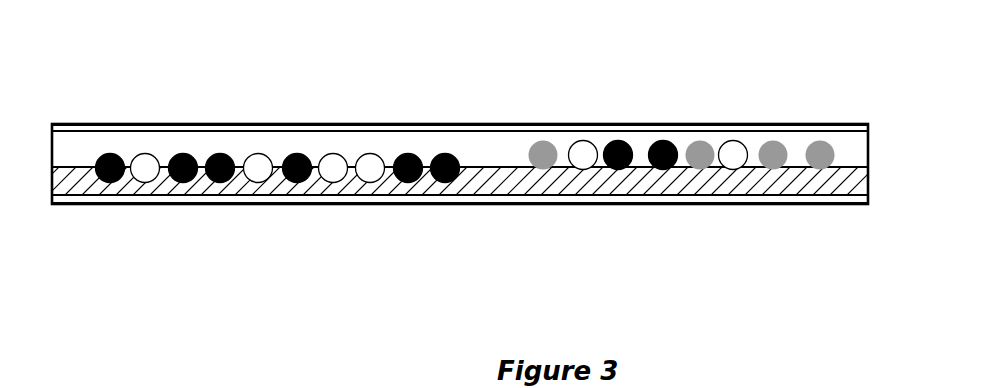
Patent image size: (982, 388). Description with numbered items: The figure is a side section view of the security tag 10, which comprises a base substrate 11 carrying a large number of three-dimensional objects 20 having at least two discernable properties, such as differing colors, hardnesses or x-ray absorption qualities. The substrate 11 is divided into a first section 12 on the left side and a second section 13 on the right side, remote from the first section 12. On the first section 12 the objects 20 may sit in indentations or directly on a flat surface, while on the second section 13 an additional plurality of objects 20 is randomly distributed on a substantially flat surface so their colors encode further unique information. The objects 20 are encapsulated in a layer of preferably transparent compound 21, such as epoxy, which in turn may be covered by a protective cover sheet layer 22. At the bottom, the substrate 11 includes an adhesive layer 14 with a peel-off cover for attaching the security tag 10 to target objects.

The security tag 10 is at (131, 262).
The base substrate 11 is at (489, 183).
The first section 12 is at (146, 118).
The second section 13 is at (758, 119).
The adhesive layer 14 is at (264, 190).
The objects 20 is at (192, 153).
The compound layer 21 is at (477, 150).
The protective cover sheet layer 22 is at (600, 128).